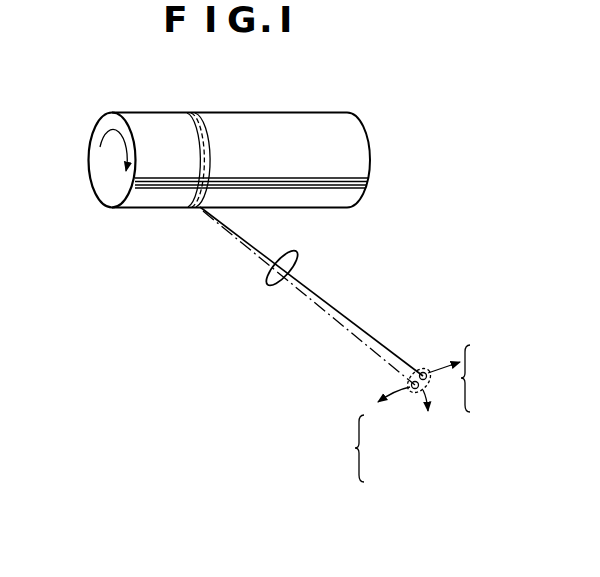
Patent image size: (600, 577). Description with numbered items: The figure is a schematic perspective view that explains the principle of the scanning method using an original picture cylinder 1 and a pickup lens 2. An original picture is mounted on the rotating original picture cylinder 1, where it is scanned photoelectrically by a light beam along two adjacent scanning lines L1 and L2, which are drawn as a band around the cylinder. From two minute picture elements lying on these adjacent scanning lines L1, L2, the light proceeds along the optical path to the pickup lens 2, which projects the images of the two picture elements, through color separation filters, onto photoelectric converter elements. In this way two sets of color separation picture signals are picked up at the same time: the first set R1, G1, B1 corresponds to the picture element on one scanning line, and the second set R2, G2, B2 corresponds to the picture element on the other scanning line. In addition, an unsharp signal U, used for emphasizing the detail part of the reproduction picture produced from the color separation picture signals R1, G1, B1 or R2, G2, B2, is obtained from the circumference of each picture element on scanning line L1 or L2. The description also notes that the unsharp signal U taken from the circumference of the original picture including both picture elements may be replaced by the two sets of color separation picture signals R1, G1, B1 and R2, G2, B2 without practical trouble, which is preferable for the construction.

The original picture cylinder 1 is at (140, 203).
The pickup lens 2 is at (267, 278).
The scanning line L1 is at (198, 140).
The scanning line L2 is at (212, 143).
The red color separation picture signal R1 is at (461, 378).
The green color separation picture signal G1 is at (485, 378).
The blue color separation picture signal B1 is at (484, 399).
The red color separation picture signal R2 is at (382, 434).
The green color separation picture signal G2 is at (377, 447).
The blue color separation picture signal B2 is at (376, 469).
The unsharp signal U is at (428, 416).